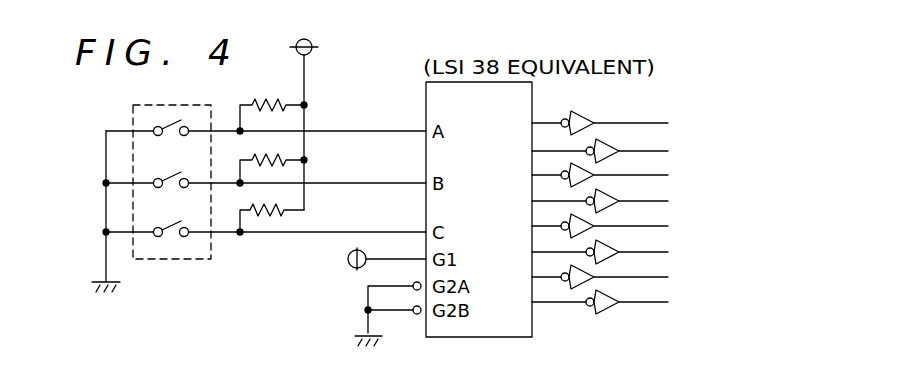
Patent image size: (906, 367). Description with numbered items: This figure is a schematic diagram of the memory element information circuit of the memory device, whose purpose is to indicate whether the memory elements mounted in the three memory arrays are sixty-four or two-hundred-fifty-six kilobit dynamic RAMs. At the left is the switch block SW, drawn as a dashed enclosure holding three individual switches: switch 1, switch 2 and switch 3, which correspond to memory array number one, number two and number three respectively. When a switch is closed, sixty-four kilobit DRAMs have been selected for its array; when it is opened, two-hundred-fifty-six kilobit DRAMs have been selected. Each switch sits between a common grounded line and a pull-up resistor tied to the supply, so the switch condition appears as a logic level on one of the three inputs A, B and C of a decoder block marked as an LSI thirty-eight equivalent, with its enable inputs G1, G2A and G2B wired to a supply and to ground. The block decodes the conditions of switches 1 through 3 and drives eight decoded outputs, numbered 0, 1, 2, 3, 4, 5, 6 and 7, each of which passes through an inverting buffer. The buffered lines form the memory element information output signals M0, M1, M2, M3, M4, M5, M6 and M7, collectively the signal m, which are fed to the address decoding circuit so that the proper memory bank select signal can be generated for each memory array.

The memory element information switch SW is at (173, 170).
The switch SW- 1 is at (173, 138).
The switch SW- 2 is at (173, 190).
The switch SW- 3 is at (173, 239).
The decoder output 0 is at (536, 123).
The decoder output 4 is at (536, 226).
The decoder output 5 is at (549, 252).
The decoder output 6 is at (536, 277).
The decoder output 7 is at (549, 302).
The output signal M0 is at (658, 120).
The output signal M1 is at (658, 146).
The output signal M2 is at (658, 171).
The output signal M3 is at (658, 196).
The output signal M4 is at (658, 222).
The output signal M5 is at (658, 247).
The output signal M6 is at (658, 272).
The output signal M7 is at (658, 297).